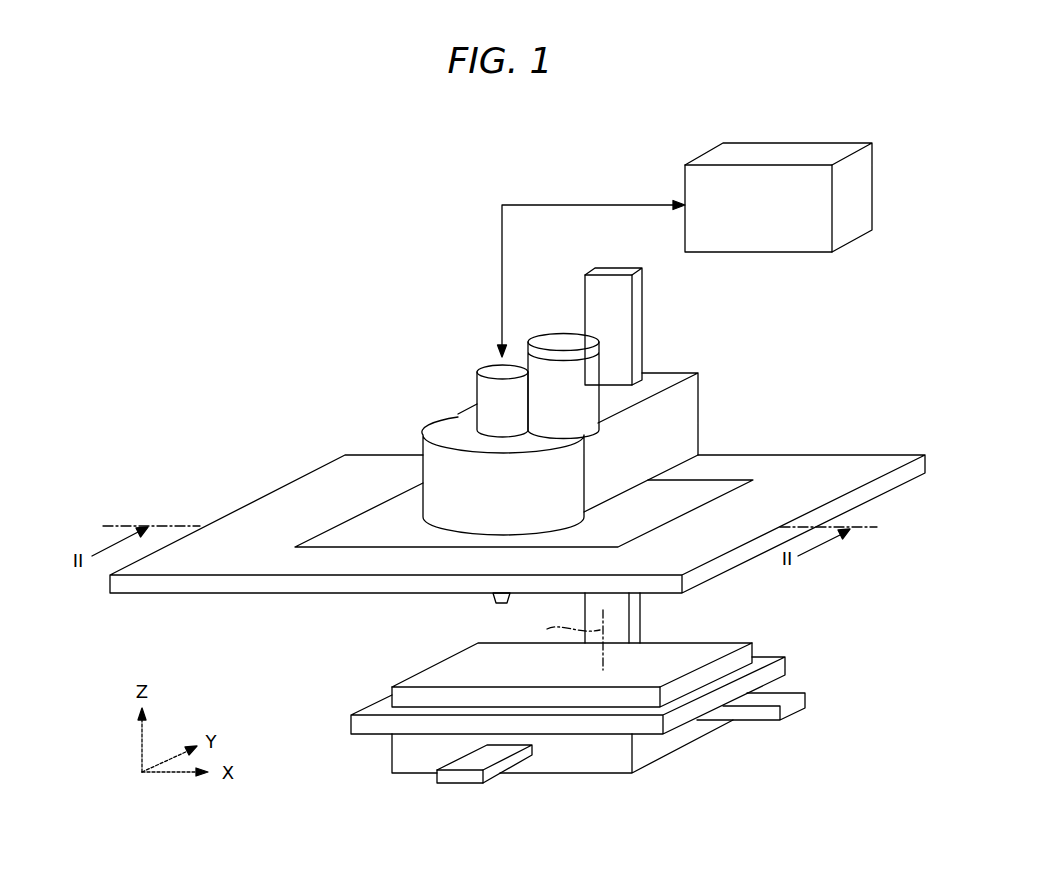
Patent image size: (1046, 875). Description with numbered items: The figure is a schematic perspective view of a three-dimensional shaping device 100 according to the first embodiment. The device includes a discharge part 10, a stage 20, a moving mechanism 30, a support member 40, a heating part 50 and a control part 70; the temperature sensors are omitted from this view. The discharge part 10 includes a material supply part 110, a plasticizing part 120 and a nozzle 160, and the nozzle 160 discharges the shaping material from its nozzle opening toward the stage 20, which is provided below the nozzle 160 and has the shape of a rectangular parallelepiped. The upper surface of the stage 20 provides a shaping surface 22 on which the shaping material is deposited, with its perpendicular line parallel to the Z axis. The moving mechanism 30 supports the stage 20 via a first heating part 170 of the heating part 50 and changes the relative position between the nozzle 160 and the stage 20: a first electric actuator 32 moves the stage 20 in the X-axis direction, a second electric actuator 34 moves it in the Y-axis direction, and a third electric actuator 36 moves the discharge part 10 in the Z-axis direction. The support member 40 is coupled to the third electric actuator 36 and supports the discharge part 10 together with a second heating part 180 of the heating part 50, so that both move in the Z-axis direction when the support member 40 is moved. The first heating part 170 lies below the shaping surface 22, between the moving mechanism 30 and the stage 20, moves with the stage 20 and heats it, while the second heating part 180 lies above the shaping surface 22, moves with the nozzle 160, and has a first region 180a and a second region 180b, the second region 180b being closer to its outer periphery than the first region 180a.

The discharge part 10 is at (539, 392).
The stage 20 is at (536, 671).
The shaping surface 22 is at (557, 670).
The moving mechanism 30 is at (565, 699).
The first electric actuator 32 is at (803, 703).
The second electric actuator 34 is at (486, 772).
The third electric actuator 36 is at (641, 621).
The support member 40 is at (653, 438).
The heating part 50 is at (517, 513).
The control part 70 is at (776, 155).
The three-dimensional shaping device 100 is at (517, 527).
The material supply part 110 is at (562, 338).
The plasticizing part 120 is at (440, 487).
The nozzle 160 is at (512, 598).
The first heating part 170 is at (368, 725).
The second heating part 180 is at (466, 466).
The first region 180a is at (367, 528).
The second region 180b is at (250, 527).